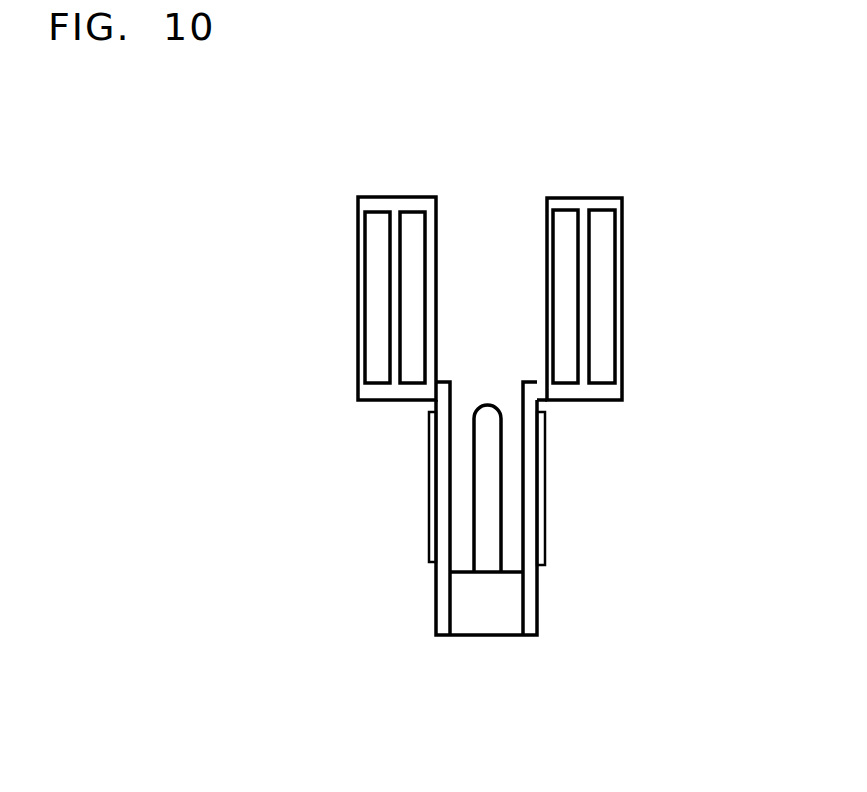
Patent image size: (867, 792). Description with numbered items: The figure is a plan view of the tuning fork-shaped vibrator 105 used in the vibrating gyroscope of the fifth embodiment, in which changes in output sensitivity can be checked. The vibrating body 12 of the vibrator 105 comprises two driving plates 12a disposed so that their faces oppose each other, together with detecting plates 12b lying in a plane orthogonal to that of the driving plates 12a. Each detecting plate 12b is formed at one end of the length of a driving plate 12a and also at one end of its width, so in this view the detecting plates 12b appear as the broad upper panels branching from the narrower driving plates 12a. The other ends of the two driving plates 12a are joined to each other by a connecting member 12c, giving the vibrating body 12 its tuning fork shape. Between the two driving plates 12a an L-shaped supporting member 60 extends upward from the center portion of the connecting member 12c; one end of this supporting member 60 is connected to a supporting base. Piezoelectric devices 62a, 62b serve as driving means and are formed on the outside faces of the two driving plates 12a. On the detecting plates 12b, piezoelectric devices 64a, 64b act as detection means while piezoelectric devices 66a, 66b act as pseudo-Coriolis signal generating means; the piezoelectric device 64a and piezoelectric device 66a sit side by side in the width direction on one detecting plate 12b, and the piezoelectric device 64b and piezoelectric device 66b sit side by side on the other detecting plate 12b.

The vibrator 105 is at (207, 162).
The vibrating body 12 is at (632, 194).
The driving plates 12a is at (440, 573).
The detecting plates 12b is at (362, 388).
The connecting member 12c is at (483, 620).
The supporting member 60 is at (488, 417).
The piezoelectric device 62a is at (433, 497).
The piezoelectric device 62b is at (542, 493).
The piezoelectric device 64a is at (375, 240).
The piezoelectric device 64b is at (603, 252).
The piezoelectric device 66a is at (417, 242).
The piezoelectric device 66b is at (560, 272).